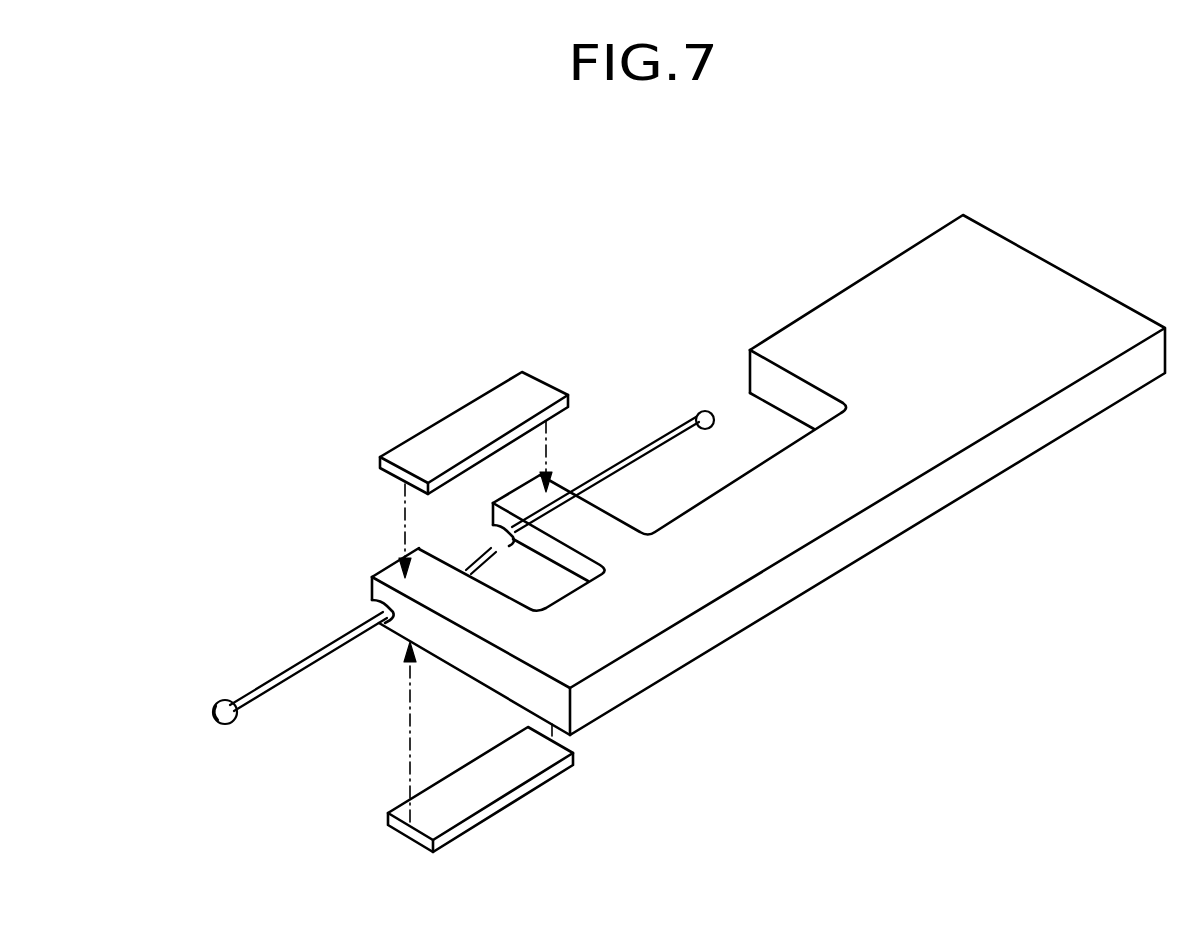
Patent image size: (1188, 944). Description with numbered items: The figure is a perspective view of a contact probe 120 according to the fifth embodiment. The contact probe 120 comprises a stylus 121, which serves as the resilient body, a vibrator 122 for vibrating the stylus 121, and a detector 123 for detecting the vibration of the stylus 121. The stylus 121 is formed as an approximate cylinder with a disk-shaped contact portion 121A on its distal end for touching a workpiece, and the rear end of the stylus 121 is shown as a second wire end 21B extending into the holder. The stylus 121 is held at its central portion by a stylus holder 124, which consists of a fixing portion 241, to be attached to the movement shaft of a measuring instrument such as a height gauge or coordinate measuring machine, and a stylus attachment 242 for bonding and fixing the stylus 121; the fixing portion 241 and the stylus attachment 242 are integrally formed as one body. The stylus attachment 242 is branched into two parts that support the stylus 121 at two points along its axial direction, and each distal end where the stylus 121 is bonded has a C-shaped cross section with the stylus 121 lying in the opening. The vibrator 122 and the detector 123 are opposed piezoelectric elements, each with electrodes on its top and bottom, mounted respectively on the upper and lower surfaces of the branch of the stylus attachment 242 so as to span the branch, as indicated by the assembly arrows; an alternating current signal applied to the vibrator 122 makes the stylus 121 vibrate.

The contact probe 120 is at (572, 306).
The stylus holder 124 is at (822, 497).
The fixing portion 241 is at (863, 312).
The stylus attachment 242 is at (620, 637).
The vibrator 122 is at (430, 440).
The detector 123 is at (470, 820).
The stylus 121 is at (322, 650).
The contact portion 121A is at (223, 703).
The lead wire end 21B is at (703, 411).